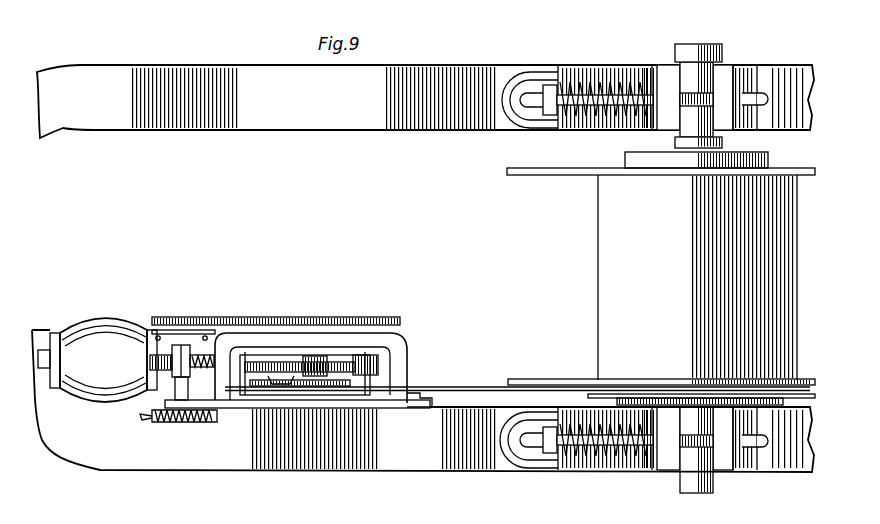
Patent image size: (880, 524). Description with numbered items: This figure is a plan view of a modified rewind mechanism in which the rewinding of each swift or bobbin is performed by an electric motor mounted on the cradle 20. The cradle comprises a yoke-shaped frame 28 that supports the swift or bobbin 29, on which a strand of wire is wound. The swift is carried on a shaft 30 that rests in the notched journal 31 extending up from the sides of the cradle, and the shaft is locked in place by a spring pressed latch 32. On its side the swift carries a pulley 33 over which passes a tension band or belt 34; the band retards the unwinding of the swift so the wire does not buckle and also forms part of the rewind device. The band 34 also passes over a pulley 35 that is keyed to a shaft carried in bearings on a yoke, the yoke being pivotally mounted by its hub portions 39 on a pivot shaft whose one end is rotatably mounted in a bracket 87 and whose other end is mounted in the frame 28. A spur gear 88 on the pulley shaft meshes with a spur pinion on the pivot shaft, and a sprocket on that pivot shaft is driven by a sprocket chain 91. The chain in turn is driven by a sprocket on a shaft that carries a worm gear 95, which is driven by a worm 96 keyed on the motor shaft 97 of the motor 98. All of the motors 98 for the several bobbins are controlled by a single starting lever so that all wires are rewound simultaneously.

The cradle 20 is at (353, 120).
The yoke-shaped frame 28 is at (404, 462).
The swift or bobbin 29 is at (540, 176).
The shaft 30 is at (701, 50).
The notched journal 31 is at (665, 70).
The spring pressed latch 32 is at (528, 106).
The pulley 33 is at (612, 379).
The tension band or belt 34 is at (517, 377).
The pulley 35 is at (316, 403).
The hub portions 39 is at (427, 376).
The bracket 87 is at (403, 345).
The spur gear 88 is at (287, 362).
The sprocket chain 91 is at (249, 316).
The worm gear 95 is at (203, 353).
The worm 96 is at (177, 343).
The motor shaft 97 is at (165, 357).
The motor 98 is at (93, 328).